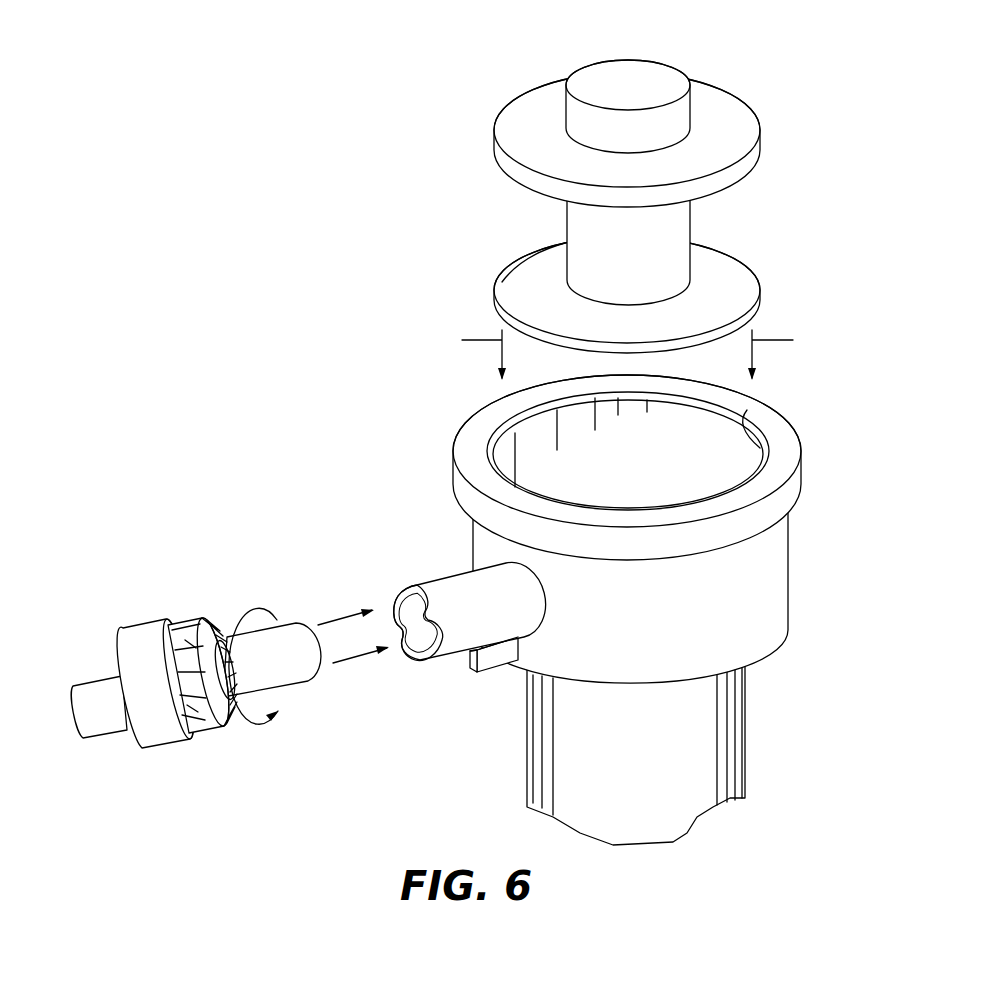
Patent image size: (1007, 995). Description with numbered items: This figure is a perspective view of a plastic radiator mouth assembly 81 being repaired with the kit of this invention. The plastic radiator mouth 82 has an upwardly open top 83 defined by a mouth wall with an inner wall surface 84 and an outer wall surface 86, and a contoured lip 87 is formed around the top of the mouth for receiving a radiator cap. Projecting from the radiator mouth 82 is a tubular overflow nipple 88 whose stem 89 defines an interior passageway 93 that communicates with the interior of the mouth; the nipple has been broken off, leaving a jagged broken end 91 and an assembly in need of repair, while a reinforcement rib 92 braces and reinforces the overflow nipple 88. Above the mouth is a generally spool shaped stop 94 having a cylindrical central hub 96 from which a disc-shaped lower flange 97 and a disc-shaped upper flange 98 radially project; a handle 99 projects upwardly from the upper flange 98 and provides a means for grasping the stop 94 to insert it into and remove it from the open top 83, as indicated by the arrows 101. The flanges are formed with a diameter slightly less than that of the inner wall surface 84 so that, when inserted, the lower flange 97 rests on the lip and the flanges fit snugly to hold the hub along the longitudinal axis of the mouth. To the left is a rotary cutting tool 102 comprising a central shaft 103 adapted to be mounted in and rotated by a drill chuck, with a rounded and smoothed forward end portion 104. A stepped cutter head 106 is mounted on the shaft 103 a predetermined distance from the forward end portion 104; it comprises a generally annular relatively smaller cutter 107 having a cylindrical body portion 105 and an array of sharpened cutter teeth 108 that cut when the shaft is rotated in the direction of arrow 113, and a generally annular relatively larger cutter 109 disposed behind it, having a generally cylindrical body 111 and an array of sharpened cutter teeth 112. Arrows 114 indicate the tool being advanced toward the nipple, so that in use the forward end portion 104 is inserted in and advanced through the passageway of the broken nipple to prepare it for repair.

The plastic radiator mouth assembly 81 is at (835, 158).
The plastic radiator mouth 82 is at (629, 610).
The upwardly open top 83 is at (694, 443).
The inner wall surface 84 is at (748, 410).
The outer wall surface 86 is at (713, 618).
The contoured lip 87 is at (617, 467).
The tubular overflow nipple 88 is at (452, 685).
The stem 89 is at (452, 623).
The jagged broken end 91 is at (393, 600).
The reinforcement rib 92 is at (497, 655).
The interior passageway 93 is at (400, 633).
The spool shaped stop 94 is at (625, 183).
The cylindrical central hub 96 is at (583, 228).
The disc-shaped lower flange 97 is at (517, 297).
The disc-shaped upper flange 98 is at (513, 130).
The handle 99 is at (575, 117).
The arrows 101 is at (627, 355).
The rotary cutting tool 102 is at (227, 717).
The central shaft 103 is at (95, 700).
The forward end portion 104 is at (308, 657).
The cylindrical body portion 105 is at (206, 654).
The stepped cutter head 106 is at (212, 777).
The relatively smaller cutter 107 is at (198, 620).
The sharpened cutter teeth 108 is at (207, 636).
The relatively larger cutter 109 is at (142, 758).
The generally cylindrical body 111 is at (148, 725).
The sharpened cutter teeth 112 is at (192, 643).
The arrow 113 is at (250, 606).
The insertion arrows 114 is at (326, 618).